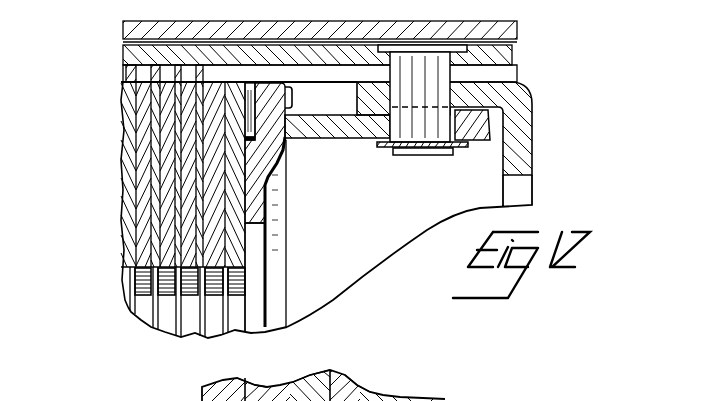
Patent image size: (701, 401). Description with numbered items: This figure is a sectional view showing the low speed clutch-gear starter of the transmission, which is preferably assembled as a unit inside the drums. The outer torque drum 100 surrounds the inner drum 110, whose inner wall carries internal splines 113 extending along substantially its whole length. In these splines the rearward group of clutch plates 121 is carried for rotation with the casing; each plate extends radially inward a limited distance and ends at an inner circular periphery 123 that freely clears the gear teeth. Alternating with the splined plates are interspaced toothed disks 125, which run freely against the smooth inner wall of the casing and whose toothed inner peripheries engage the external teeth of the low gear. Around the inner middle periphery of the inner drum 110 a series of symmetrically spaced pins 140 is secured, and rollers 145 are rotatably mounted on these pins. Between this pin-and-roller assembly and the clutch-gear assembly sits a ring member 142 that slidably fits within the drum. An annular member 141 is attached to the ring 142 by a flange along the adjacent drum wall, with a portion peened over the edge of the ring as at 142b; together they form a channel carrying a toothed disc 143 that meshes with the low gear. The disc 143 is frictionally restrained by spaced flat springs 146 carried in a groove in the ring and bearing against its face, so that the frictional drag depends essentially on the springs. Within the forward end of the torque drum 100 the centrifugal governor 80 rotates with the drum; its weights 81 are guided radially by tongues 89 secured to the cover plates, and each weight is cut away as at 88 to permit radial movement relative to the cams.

The torque drum 100 is at (513, 30).
The inner drum 110 is at (515, 53).
The internal splines 113 is at (507, 75).
The clutch plates 121 is at (160, 320).
The inner circular periphery 123 is at (136, 262).
The toothed disks 125 is at (217, 318).
The annular member 141 is at (220, 317).
The pins 140 is at (422, 125).
The ring member 142 is at (286, 150).
The peened-over portion 142b is at (293, 102).
The toothed disc 143 is at (250, 226).
The rollers 145 is at (480, 135).
The flat springs 146 is at (290, 139).
The centrifugal governor 80 is at (323, 370).
The weights 81 is at (290, 383).
The cut-away groove 88 is at (257, 398).
The tongues 89 is at (353, 398).